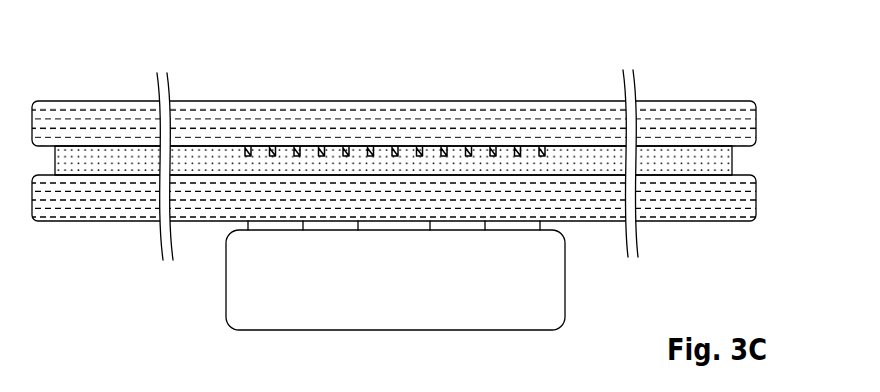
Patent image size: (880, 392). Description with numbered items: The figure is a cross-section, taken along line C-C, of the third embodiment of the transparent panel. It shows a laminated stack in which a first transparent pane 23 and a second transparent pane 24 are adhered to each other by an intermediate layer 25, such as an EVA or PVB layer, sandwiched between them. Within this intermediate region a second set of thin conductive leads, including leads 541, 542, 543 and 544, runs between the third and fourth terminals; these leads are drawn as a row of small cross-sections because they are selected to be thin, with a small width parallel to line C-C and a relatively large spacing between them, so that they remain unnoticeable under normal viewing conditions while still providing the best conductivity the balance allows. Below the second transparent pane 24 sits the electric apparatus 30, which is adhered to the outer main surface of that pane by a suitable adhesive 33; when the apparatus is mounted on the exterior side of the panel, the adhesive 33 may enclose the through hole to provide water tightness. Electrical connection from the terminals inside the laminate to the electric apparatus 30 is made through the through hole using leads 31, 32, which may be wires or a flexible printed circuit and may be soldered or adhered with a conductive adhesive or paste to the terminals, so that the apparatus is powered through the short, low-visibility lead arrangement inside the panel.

The first transparent pane 23 is at (480, 133).
The second transparent pane 24 is at (668, 193).
The intermediate layer 25 is at (687, 165).
The electric apparatus 30 is at (337, 313).
The lead 31 is at (359, 228).
The lead 32 is at (430, 226).
The adhesive 33 is at (265, 226).
The lead 541 is at (250, 147).
The lead 542 is at (325, 147).
The lead 543 is at (421, 147).
The lead 544 is at (545, 147).